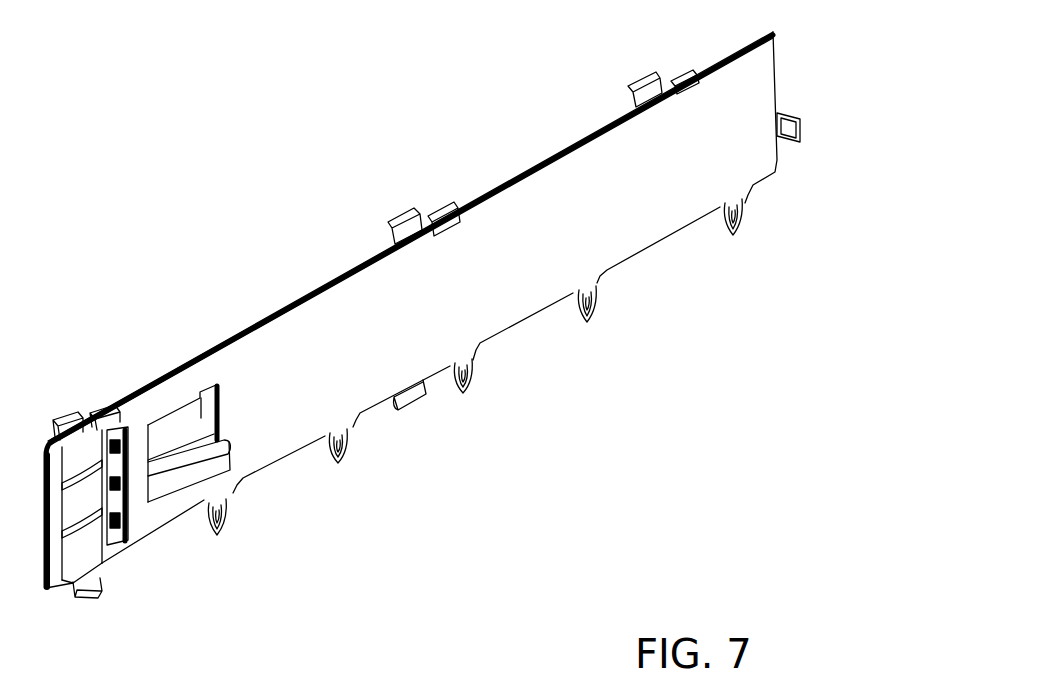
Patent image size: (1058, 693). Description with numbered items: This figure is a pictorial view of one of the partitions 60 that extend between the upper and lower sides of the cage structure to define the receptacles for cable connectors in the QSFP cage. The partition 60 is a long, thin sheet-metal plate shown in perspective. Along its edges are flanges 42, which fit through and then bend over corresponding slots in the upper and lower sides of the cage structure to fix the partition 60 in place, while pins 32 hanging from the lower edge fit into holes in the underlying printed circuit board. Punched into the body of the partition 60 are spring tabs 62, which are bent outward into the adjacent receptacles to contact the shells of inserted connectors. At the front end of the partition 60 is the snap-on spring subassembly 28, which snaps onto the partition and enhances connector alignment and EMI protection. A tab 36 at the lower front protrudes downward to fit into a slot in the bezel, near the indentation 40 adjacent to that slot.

The snap-on spring subassembly 28 is at (90, 563).
The pins 32 is at (740, 233).
The tab 36 is at (95, 598).
The indentation 40 is at (414, 402).
The flanges 42 is at (397, 220).
The partition 60 is at (278, 430).
The spring tabs 62 is at (175, 423).